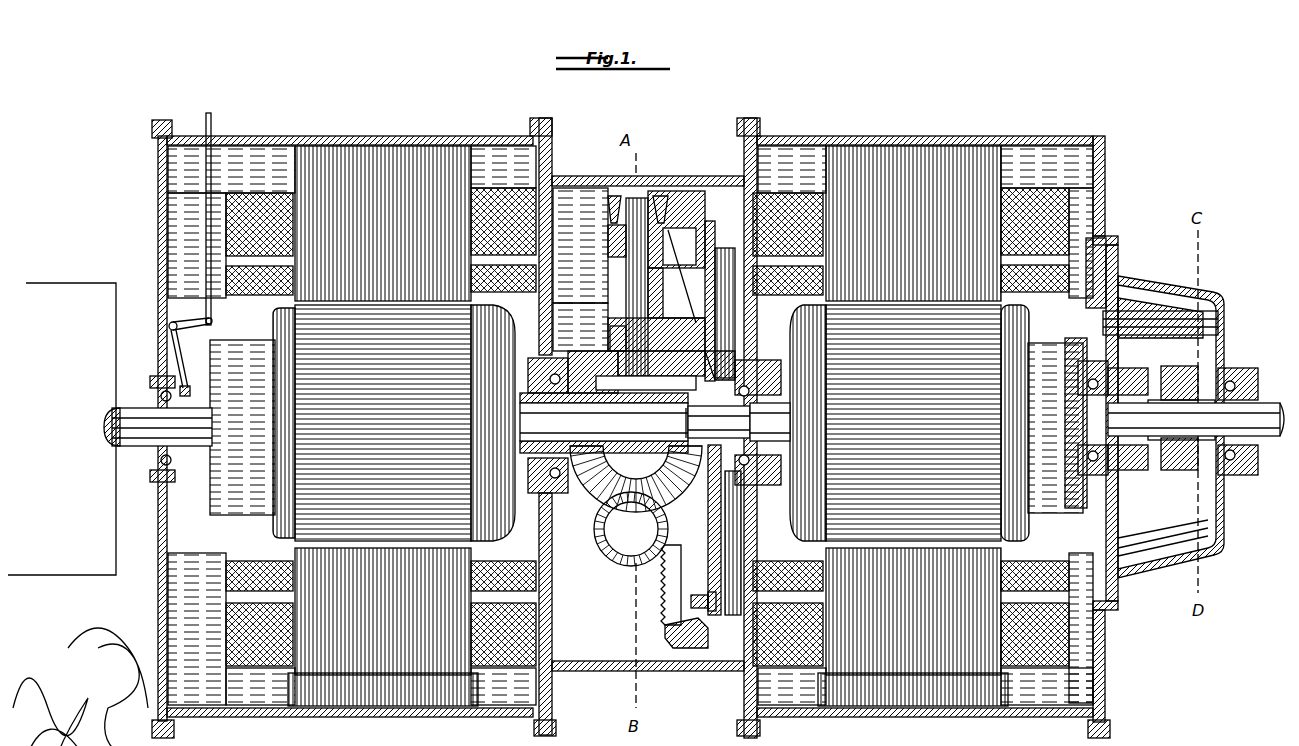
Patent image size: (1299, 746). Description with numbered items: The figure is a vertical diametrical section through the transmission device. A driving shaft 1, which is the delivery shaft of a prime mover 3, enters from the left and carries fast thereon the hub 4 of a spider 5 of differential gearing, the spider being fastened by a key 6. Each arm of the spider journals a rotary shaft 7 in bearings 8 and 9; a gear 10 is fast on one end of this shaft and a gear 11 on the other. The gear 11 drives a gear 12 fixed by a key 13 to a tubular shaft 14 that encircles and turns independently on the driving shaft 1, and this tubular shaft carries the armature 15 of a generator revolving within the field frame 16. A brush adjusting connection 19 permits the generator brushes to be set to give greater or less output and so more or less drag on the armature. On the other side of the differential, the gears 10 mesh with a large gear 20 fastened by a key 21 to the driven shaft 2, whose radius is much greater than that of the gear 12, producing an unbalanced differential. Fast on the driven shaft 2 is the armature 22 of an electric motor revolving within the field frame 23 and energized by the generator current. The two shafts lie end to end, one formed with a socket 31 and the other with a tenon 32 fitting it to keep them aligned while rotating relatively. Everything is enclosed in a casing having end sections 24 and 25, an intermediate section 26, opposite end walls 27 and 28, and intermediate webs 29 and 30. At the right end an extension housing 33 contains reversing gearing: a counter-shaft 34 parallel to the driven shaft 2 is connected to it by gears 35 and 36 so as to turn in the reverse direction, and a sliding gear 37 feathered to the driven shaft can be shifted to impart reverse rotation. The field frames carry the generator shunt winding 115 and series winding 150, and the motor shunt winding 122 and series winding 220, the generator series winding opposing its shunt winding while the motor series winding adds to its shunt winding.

The driving shaft 1 is at (127, 443).
The driven shaft 2 is at (1199, 419).
The prime mover 3 is at (62, 275).
The hub 4 is at (645, 364).
The spider 5 is at (676, 276).
The key 6 is at (600, 405).
The rotary shaft 7 is at (618, 308).
The bearing 8 is at (676, 229).
The bearing 9 is at (600, 323).
The gear 10 is at (645, 198).
The gear 11 is at (705, 358).
The gear 12 is at (575, 485).
The key 13 is at (588, 367).
The tubular shaft 14 is at (507, 380).
The armature 15 is at (362, 423).
The field frame 16 is at (337, 152).
The brush adjusting connection 19 is at (187, 311).
The large gear 20 is at (655, 589).
The key 21 is at (770, 422).
The armature 22 is at (936, 423).
The field frame 23 is at (905, 148).
The end section 24 is at (427, 130).
The end section 25 is at (838, 130).
The intermediate section 26 is at (572, 170).
The end wall 27 is at (150, 215).
The end wall 28 is at (1097, 160).
The intermediate partition 29 is at (548, 625).
The intermediate partition 30 is at (700, 626).
The socket 31 is at (678, 411).
The tenon 32 is at (719, 422).
The extension housing 33 is at (1175, 283).
The counter-shaft 34 is at (1212, 309).
The gear 35 is at (1112, 285).
The gear 36 is at (1113, 470).
The sliding gear 37 is at (1172, 464).
The shunt field winding 115 is at (243, 185).
The shunt field winding 122 is at (1098, 213).
The series winding 150 is at (258, 290).
The series winding 220 is at (1040, 288).